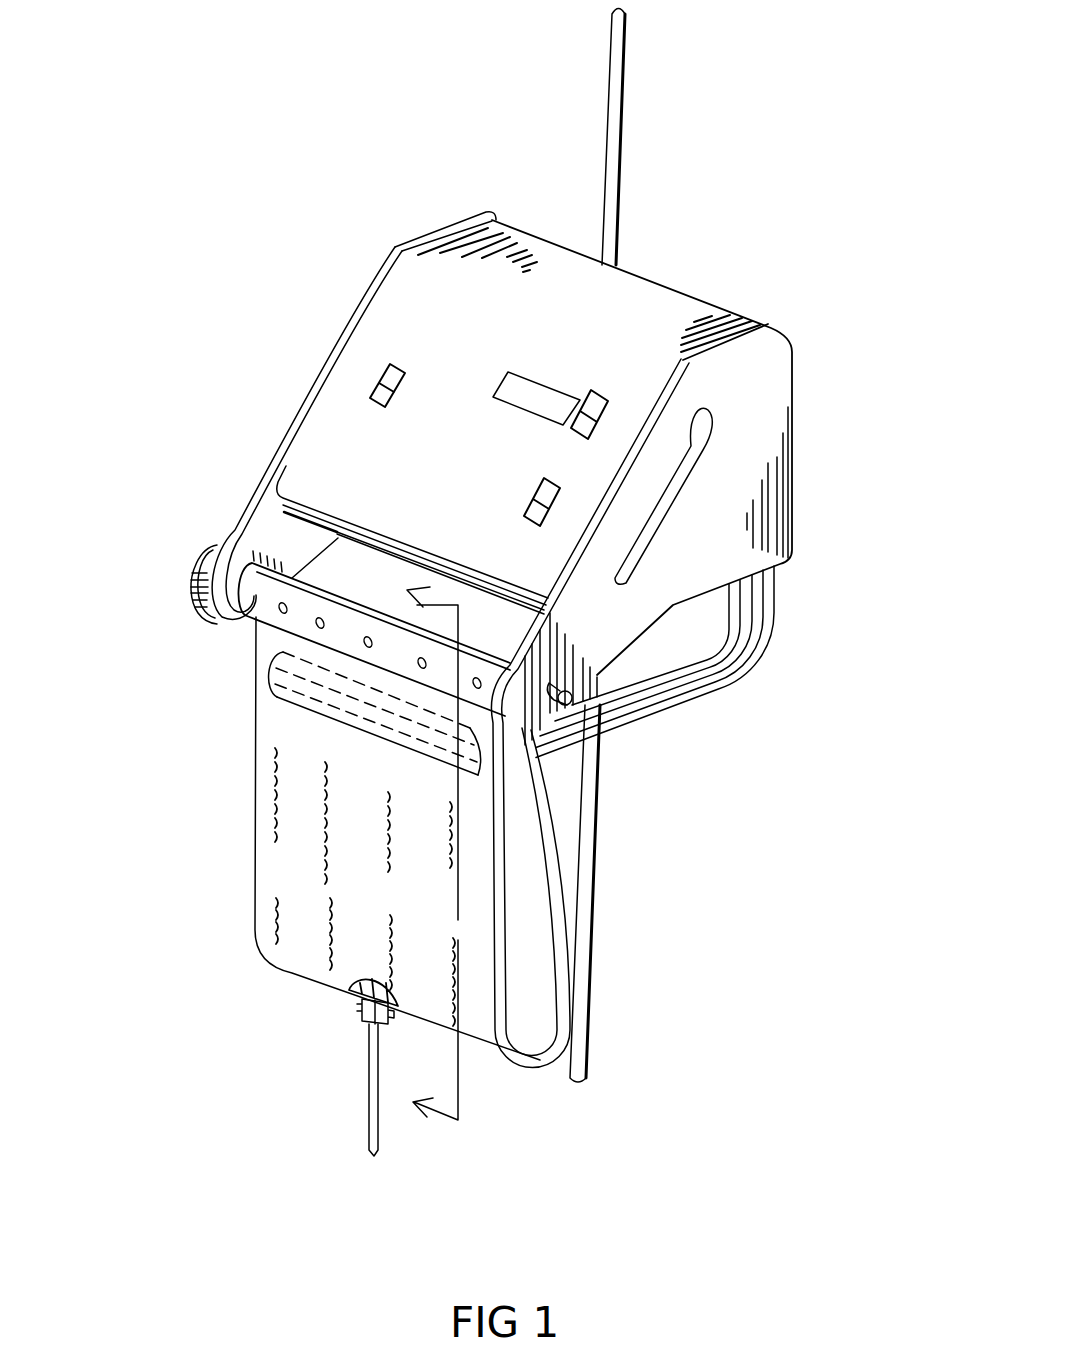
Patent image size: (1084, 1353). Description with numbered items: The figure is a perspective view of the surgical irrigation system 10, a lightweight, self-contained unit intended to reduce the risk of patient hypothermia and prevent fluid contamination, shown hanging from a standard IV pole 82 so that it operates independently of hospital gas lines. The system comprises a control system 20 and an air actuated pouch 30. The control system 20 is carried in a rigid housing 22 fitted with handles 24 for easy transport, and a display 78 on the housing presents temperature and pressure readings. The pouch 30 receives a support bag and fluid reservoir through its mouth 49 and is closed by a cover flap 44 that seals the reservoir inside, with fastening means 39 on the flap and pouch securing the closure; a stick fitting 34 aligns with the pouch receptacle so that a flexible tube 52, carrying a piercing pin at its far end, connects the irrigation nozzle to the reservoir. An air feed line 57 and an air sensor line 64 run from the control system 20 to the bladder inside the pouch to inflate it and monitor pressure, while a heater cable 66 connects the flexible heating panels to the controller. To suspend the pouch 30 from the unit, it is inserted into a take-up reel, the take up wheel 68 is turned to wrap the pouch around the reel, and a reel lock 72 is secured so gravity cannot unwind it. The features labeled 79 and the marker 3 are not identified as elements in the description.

The surgical irrigation system 10 is at (500, 105).
The control system 20 is at (318, 292).
The rigid housing 22 is at (778, 492).
The handles 24 is at (677, 490).
The air actuated pouch 30 is at (305, 865).
The stick fitting 34 is at (330, 1027).
The fastening means 39 is at (297, 713).
The cover flap 44 is at (440, 768).
The mouth 49 is at (283, 658).
The flexible tube 52 is at (369, 1120).
The air feed line 57 is at (677, 700).
The air sensor line 64 is at (735, 653).
The heater cable 66 is at (730, 603).
The take up wheel 68 is at (212, 567).
The reel lock 72 is at (567, 698).
The display 78 is at (543, 397).
The tabs 79 is at (535, 510).
The IV pole 82 is at (618, 90).
The section line 3- 3 is at (485, 1165).